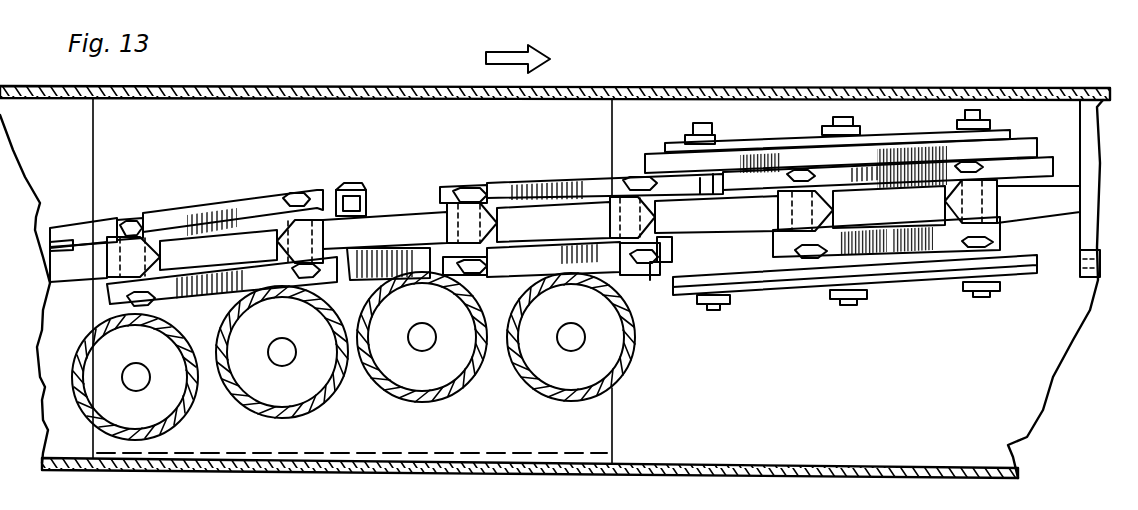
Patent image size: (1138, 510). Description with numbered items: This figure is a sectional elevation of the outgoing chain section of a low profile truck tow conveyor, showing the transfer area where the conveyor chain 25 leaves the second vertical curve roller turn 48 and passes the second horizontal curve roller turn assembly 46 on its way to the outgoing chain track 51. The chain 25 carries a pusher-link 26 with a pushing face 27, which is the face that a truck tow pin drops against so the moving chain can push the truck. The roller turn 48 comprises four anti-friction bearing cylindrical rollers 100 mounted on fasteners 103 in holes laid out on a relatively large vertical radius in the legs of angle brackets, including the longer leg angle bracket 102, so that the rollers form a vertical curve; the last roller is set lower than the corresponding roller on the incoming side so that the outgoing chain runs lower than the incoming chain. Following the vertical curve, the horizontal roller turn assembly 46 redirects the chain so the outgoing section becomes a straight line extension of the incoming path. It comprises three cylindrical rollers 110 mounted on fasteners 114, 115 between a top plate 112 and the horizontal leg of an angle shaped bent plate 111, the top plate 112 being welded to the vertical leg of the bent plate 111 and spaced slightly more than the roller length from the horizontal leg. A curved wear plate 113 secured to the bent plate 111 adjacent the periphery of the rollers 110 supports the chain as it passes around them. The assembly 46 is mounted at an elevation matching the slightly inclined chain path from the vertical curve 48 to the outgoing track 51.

The conveyor chain 25 is at (233, 168).
The pusher-link 26 is at (399, 210).
The pushing face 27 is at (375, 150).
The second horizontal curve roller turn assembly 46 is at (919, 307).
The second vertical curve roller turn 48 is at (458, 424).
The outgoing chain track 51 is at (1081, 280).
The anti-friction bearing cylindrical rollers 100 is at (613, 373).
The longer leg angle bracket 102 is at (93, 132).
The fasteners 103 is at (570, 343).
The anti-friction bearing cylindrical rollers 110 is at (645, 176).
The angle shaped bent plate 111 is at (887, 293).
The top plate 112 is at (887, 140).
The curved wear plate 113 is at (675, 264).
The fasteners 114 is at (735, 308).
The fasteners 115 is at (720, 141).